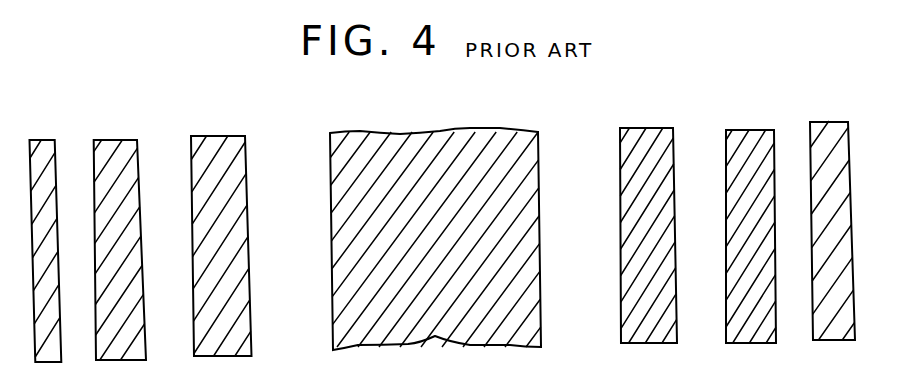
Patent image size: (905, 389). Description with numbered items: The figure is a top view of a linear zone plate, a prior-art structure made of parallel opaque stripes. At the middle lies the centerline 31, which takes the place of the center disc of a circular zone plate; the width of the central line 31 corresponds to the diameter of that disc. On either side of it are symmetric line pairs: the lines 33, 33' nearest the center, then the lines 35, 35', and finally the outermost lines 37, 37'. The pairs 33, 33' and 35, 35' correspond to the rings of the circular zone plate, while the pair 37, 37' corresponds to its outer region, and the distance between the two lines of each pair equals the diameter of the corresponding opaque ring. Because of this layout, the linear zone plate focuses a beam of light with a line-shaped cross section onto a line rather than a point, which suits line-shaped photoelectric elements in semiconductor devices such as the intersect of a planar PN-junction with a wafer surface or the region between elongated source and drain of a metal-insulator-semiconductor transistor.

The centerline 31 is at (435, 224).
The line 33 is at (221, 228).
The line 35 is at (120, 232).
The line 37 is at (42, 236).
The line 33' is at (648, 218).
The line 35' is at (751, 219).
The line 37' is at (832, 216).